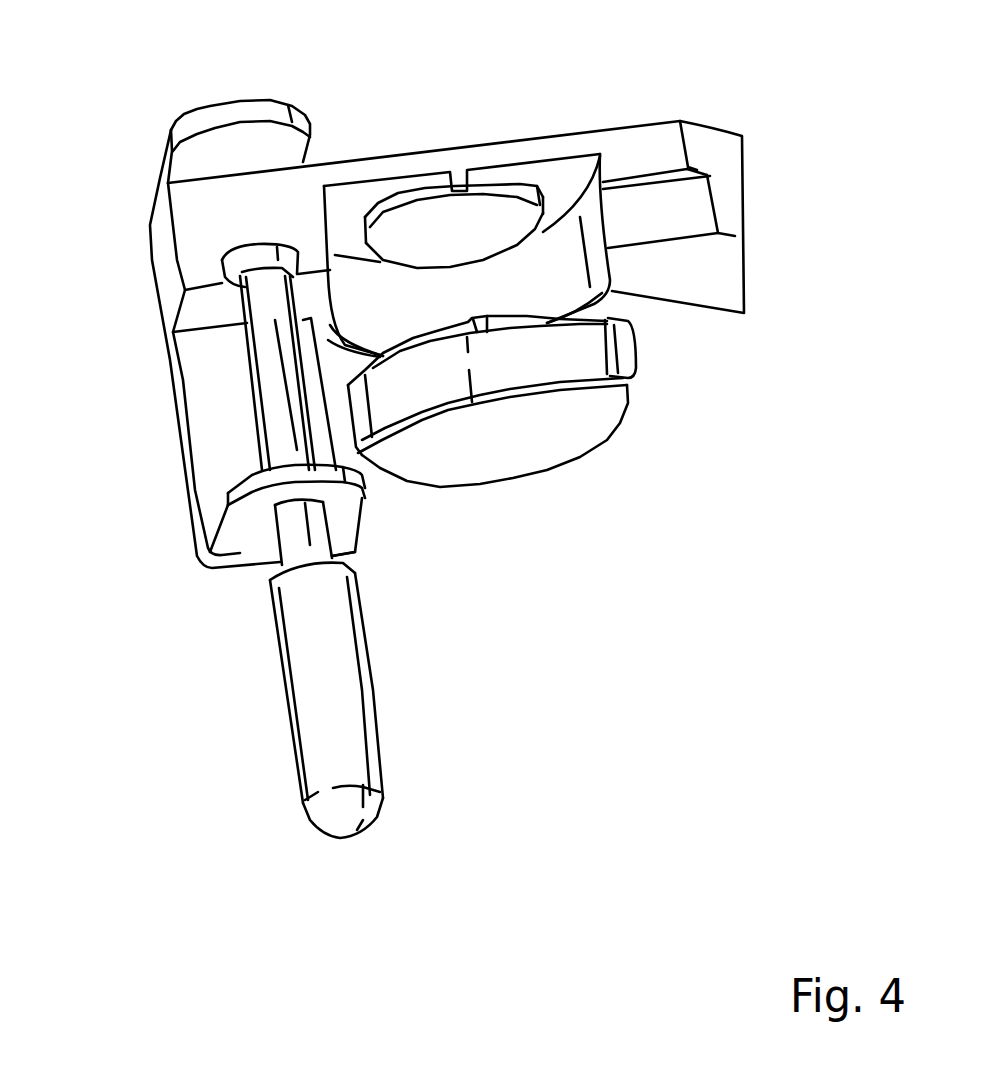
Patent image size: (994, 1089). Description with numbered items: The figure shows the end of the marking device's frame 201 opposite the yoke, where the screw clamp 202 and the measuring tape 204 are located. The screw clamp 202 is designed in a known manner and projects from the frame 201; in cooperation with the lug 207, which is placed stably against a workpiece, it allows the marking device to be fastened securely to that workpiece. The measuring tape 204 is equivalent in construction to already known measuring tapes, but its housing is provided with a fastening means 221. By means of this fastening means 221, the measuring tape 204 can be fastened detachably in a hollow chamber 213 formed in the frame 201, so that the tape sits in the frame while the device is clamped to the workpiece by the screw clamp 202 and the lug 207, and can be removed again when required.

The frame 201 is at (700, 147).
The screw clamp 202 is at (223, 450).
The measuring tape 204 is at (558, 428).
The lug 207 is at (250, 108).
The hollow chamber 213 is at (542, 266).
The fastening means 221 is at (448, 332).